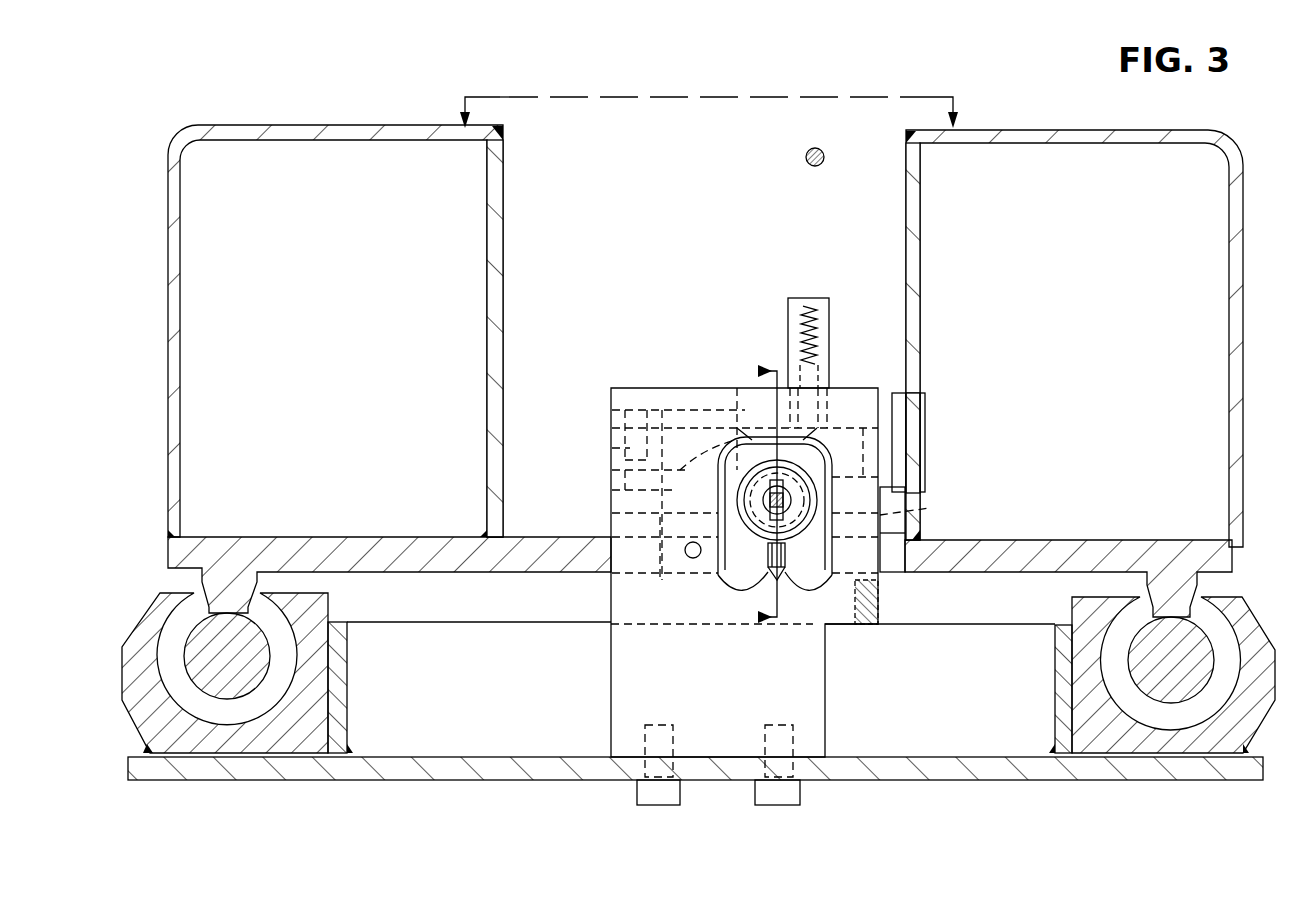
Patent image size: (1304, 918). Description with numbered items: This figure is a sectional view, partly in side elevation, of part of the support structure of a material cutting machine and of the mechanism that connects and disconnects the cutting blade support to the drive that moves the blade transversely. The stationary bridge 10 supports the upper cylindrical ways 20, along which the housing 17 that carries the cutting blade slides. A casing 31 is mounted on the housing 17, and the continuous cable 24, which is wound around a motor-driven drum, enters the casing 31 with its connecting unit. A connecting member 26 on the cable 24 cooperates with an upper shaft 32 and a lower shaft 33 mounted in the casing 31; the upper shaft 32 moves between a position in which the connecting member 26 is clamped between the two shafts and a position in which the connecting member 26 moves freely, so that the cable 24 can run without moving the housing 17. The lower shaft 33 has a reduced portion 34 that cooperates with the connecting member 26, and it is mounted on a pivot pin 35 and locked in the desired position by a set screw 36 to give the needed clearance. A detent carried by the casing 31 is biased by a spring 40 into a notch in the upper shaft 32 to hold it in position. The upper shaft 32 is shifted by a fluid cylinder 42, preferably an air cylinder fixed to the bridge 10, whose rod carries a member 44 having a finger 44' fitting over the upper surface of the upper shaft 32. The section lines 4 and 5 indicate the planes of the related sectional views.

The bridge 10 is at (1246, 163).
The section line 4- 4 is at (707, 112).
The section line 5- 5 is at (757, 495).
The housing 17 is at (948, 754).
The upper cylindrical ways 20 is at (190, 655).
The cable 24 is at (822, 151).
The connecting member 26 is at (820, 500).
The casing 31 is at (630, 384).
The upper shaft 32 is at (672, 427).
The lower shaft 33 is at (930, 508).
The reduced portion 34 is at (770, 577).
The pivot pin 35 is at (690, 559).
The set screw 36 is at (878, 603).
The spring 40 is at (818, 326).
The fluid cylinder 42 is at (890, 386).
The member 44 is at (609, 495).
The finger 44' is at (601, 423).